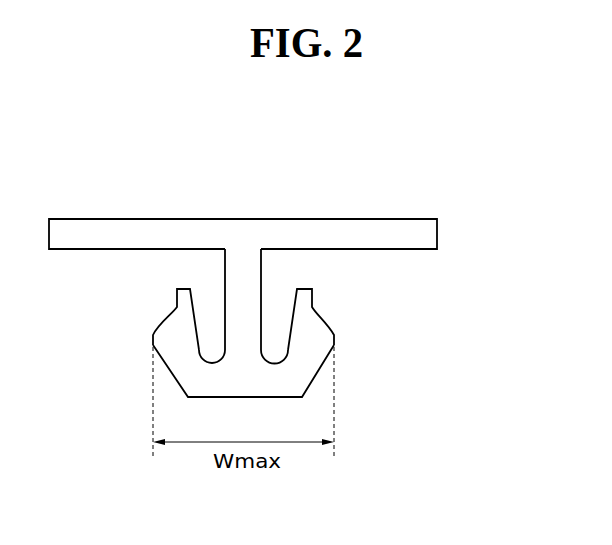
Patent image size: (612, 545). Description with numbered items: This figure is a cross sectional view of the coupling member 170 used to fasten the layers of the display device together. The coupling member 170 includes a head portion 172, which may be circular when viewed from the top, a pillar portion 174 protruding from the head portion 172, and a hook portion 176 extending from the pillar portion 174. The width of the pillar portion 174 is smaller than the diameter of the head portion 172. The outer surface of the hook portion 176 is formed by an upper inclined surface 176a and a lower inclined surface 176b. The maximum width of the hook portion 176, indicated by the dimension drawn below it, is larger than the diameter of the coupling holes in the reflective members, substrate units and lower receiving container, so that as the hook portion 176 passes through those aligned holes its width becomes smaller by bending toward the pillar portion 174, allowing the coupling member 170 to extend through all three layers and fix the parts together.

The coupling member 170 is at (303, 283).
The head portion 172 is at (360, 219).
The pillar portion 174 is at (250, 267).
The hook portion 176 is at (279, 354).
The upper inclined surface 176a is at (313, 311).
The lower inclined surface 176b is at (310, 385).